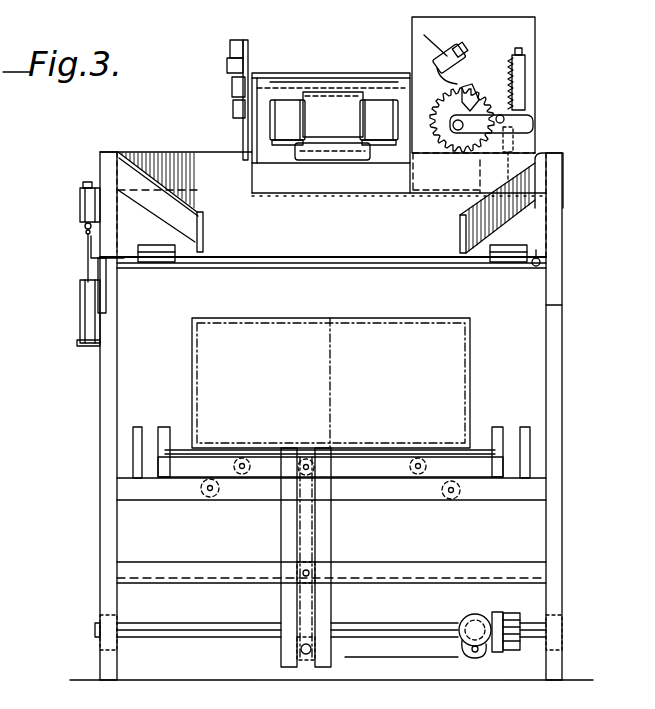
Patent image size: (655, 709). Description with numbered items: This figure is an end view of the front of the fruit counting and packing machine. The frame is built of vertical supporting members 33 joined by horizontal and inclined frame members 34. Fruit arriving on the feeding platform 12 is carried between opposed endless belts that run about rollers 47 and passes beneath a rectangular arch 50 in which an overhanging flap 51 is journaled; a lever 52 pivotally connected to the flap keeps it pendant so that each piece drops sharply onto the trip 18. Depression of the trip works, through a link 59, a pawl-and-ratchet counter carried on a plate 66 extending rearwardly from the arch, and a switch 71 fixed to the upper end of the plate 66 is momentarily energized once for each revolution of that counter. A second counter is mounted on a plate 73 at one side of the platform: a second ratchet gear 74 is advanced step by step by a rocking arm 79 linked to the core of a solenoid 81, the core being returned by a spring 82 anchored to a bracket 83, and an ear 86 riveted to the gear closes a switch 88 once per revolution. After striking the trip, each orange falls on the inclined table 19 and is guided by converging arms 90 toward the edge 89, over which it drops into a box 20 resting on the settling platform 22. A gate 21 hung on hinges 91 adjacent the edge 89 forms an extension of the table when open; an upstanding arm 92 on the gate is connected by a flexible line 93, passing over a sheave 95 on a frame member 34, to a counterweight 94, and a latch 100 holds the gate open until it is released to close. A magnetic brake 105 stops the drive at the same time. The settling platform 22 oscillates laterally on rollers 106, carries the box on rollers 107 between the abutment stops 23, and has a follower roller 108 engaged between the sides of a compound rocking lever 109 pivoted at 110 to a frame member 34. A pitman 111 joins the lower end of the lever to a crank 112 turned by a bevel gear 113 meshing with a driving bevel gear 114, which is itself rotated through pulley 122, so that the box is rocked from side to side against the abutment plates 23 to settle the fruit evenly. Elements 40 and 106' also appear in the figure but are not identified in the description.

The feeding platform 12 is at (390, 152).
The trip 18 is at (318, 152).
The inclined table 19 is at (399, 214).
The box 20 is at (472, 337).
The gate 21 is at (353, 261).
The settling platform 22 is at (376, 470).
The abutment stops 23 is at (170, 430).
The vertical supporting members 33 is at (100, 404).
The frame members 34 is at (100, 158).
The cylinder block 40 is at (286, 118).
The rollers 47 is at (280, 100).
The rectangular arch 50 is at (343, 76).
The overhanging flap 51 is at (320, 100).
The lever 52 is at (232, 92).
The link 59 is at (240, 123).
The plate 66 is at (270, 52).
The switch 71 is at (230, 46).
The plate 73 is at (535, 35).
The second ratchet gear 74 is at (474, 173).
The rocking arm 79 is at (533, 124).
The solenoid 81 is at (500, 172).
The spring 82 is at (520, 98).
The bracket 83 is at (527, 76).
The ear 86 is at (473, 89).
The switch 88 is at (460, 50).
The edge 89 is at (398, 255).
The converging arms 90 is at (130, 172).
The hinges 91 is at (158, 262).
The upstanding arm 92 is at (88, 246).
The flexible line 93 is at (85, 183).
The counterweight 94 is at (80, 327).
The sheave 95 is at (80, 205).
The latch 100 is at (105, 290).
The magnetic brake 105 is at (540, 257).
The rollers 106 is at (476, 508).
The roller 106' is at (178, 504).
The rollers 107 is at (268, 452).
The follower roller 108 is at (298, 470).
The compound rocking lever 109 is at (300, 533).
The pivot 110 is at (310, 570).
The pitman 111 is at (345, 657).
The crank 112 is at (467, 644).
The bevel gear 113 is at (464, 618).
The driving bevel gear 114 is at (497, 612).
The pulley 122 is at (508, 651).